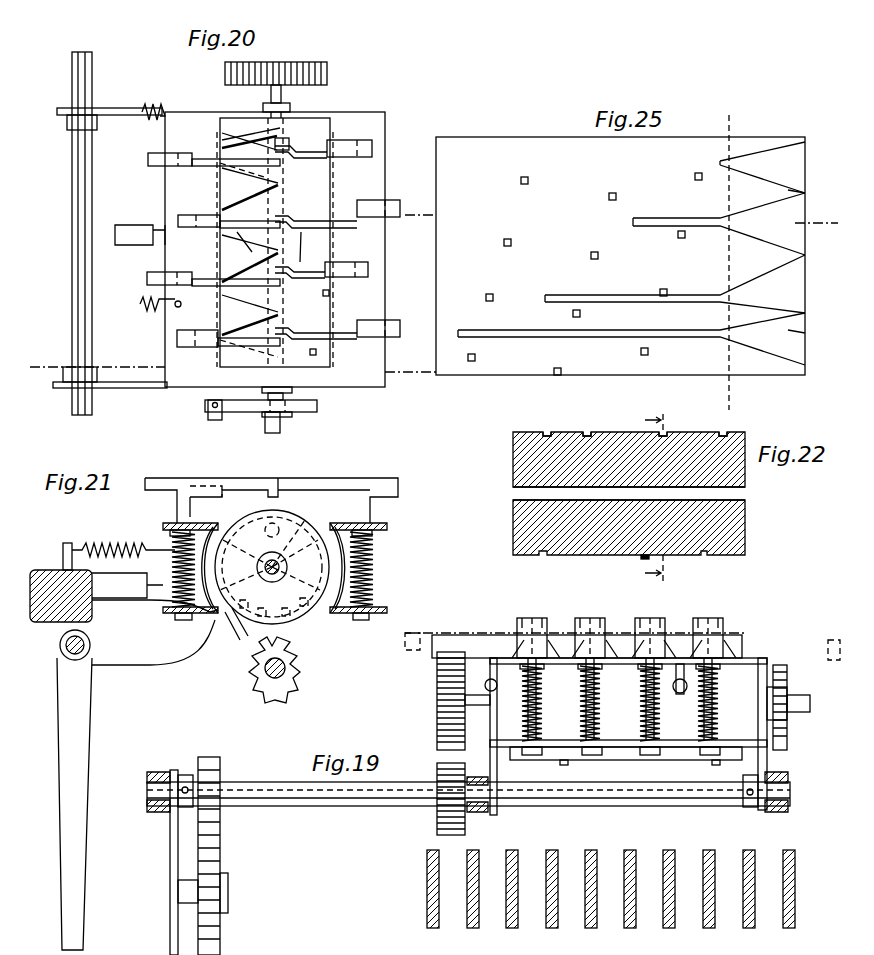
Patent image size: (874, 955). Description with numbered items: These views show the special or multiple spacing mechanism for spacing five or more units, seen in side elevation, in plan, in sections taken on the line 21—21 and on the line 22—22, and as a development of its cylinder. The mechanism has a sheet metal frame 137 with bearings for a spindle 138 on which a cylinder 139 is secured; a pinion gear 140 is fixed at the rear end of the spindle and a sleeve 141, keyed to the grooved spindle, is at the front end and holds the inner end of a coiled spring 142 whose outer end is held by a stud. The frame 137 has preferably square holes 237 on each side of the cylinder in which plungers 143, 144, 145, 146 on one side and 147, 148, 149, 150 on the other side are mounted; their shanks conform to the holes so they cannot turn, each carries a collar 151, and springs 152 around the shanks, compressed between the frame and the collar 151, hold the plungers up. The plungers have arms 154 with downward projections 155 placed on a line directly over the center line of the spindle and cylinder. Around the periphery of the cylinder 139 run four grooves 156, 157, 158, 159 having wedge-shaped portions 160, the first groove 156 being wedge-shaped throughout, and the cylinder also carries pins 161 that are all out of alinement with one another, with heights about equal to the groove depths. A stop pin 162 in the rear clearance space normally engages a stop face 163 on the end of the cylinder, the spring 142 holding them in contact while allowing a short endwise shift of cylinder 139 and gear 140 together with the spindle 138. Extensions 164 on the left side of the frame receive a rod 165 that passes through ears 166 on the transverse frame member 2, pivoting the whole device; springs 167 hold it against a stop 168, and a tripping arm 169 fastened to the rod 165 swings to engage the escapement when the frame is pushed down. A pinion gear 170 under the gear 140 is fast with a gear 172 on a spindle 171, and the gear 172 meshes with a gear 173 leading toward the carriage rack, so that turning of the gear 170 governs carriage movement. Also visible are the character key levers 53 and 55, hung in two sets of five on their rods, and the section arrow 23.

In FIG. 21, the transverse member 2 is at (35, 568).
In FIG. 20, the section line 21— 21 is at (233, 368).
In FIG. 21, the section line 22— 22 is at (270, 578).
In FIG. 22, the section line 23 is at (659, 498).
In FIG. 19, the levers 53 is at (427, 856).
In FIG. 19, the levers 55 is at (472, 928).
In FIG. 20, the frame 137 is at (193, 116).
In FIG. 21, the frame 137 is at (385, 528).
In FIG. 19, the frame 137 is at (765, 660).
In FIG. 20, the spindle 138 is at (272, 433).
In FIG. 21, the spindle 138 is at (282, 560).
In FIG. 19, the spindle 138 is at (802, 700).
In FIG. 20, the cylinder 139 is at (318, 293).
In FIG. 25, the cylinder 139 is at (621, 262).
In FIG. 22, the cylinder 139 is at (610, 495).
In FIG. 21, the cylinder 139 is at (272, 567).
In FIG. 19, the cylinder 139 is at (737, 652).
In FIG. 20, the pinion gear 140 is at (306, 64).
In FIG. 21, the pinion gear 140 is at (292, 618).
In FIG. 19, the pinion gear 140 is at (437, 717).
In FIG. 20, the sleeve 141 is at (285, 417).
In FIG. 19, the sleeve 141 is at (790, 718).
In FIG. 20, the coiled spring 142 is at (240, 412).
In FIG. 19, the coiled spring 142 is at (783, 680).
In FIG. 20, the plunger 143 is at (208, 412).
In FIG. 19, the plunger 143 is at (532, 669).
In FIG. 20, the plunger 144 is at (229, 212).
In FIG. 19, the plunger 144 is at (590, 669).
In FIG. 20, the plunger 145 is at (213, 270).
In FIG. 19, the plunger 145 is at (650, 669).
In FIG. 20, the plunger 146 is at (227, 329).
In FIG. 21, the plunger 146 is at (177, 510).
In FIG. 19, the plunger 146 is at (708, 669).
In FIG. 20, the plunger 147 is at (323, 156).
In FIG. 20, the plunger 148 is at (337, 218).
In FIG. 20, the plunger 149 is at (321, 279).
In FIG. 20, the plunger 150 is at (337, 337).
In FIG. 21, the plunger 150 is at (370, 509).
In FIG. 21, the collar 151 is at (172, 530).
In FIG. 19, the collar 151 is at (503, 680).
In FIG. 19, the spring 152 is at (598, 700).
In FIG. 20, the arm 154 is at (270, 246).
In FIG. 21, the arm 154 is at (275, 500).
In FIG. 21, the projection 155 is at (272, 482).
In FIG. 25, the groove 156 is at (762, 167).
In FIG. 22, the groove 156 is at (728, 424).
In FIG. 25, the groove 157 is at (719, 224).
In FIG. 22, the groove 157 is at (680, 426).
In FIG. 25, the groove 158 is at (675, 284).
In FIG. 22, the groove 158 is at (594, 424).
In FIG. 25, the groove 159 is at (631, 339).
In FIG. 22, the groove 159 is at (552, 424).
In FIG. 20, the wedge-shaped portion 160 is at (237, 195).
In FIG. 25, the wedge-shaped portion 160 is at (788, 208).
In FIG. 20, the pin 161 is at (330, 296).
In FIG. 25, the pin 161 is at (589, 262).
In FIG. 21, the pin 161 is at (240, 630).
In FIG. 19, the pin 161 is at (568, 765).
In FIG. 20, the stop pin 162 is at (262, 128).
In FIG. 21, the stop pin 162 is at (255, 533).
In FIG. 20, the stop face 163 is at (297, 140).
In FIG. 21, the stop face 163 is at (263, 557).
In FIG. 20, the extension 164 is at (133, 108).
In FIG. 21, the extension 164 is at (155, 632).
In FIG. 19, the extension 164 is at (494, 763).
In FIG. 20, the rod 165 is at (72, 270).
In FIG. 21, the rod 165 is at (80, 658).
In FIG. 19, the rod 165 is at (640, 800).
In FIG. 19, the ear 166 is at (158, 772).
In FIG. 20, the spring 167 is at (150, 115).
In FIG. 21, the spring 167 is at (123, 540).
In FIG. 19, the spring 167 is at (530, 695).
In FIG. 20, the stop 168 is at (140, 245).
In FIG. 21, the stop 168 is at (127, 587).
In FIG. 21, the tripping arm 169 is at (82, 844).
In FIG. 19, the tripping arm 169 is at (170, 920).
In FIG. 21, the pinion gear 170 is at (296, 672).
In FIG. 19, the pinion gear 170 is at (437, 765).
In FIG. 21, the spindle 171 is at (276, 678).
In FIG. 19, the spindle 171 is at (336, 806).
In FIG. 19, the gear 172 is at (222, 755).
In FIG. 19, the gear 173 is at (228, 888).
In FIG. 20, the hole 237 is at (183, 167).